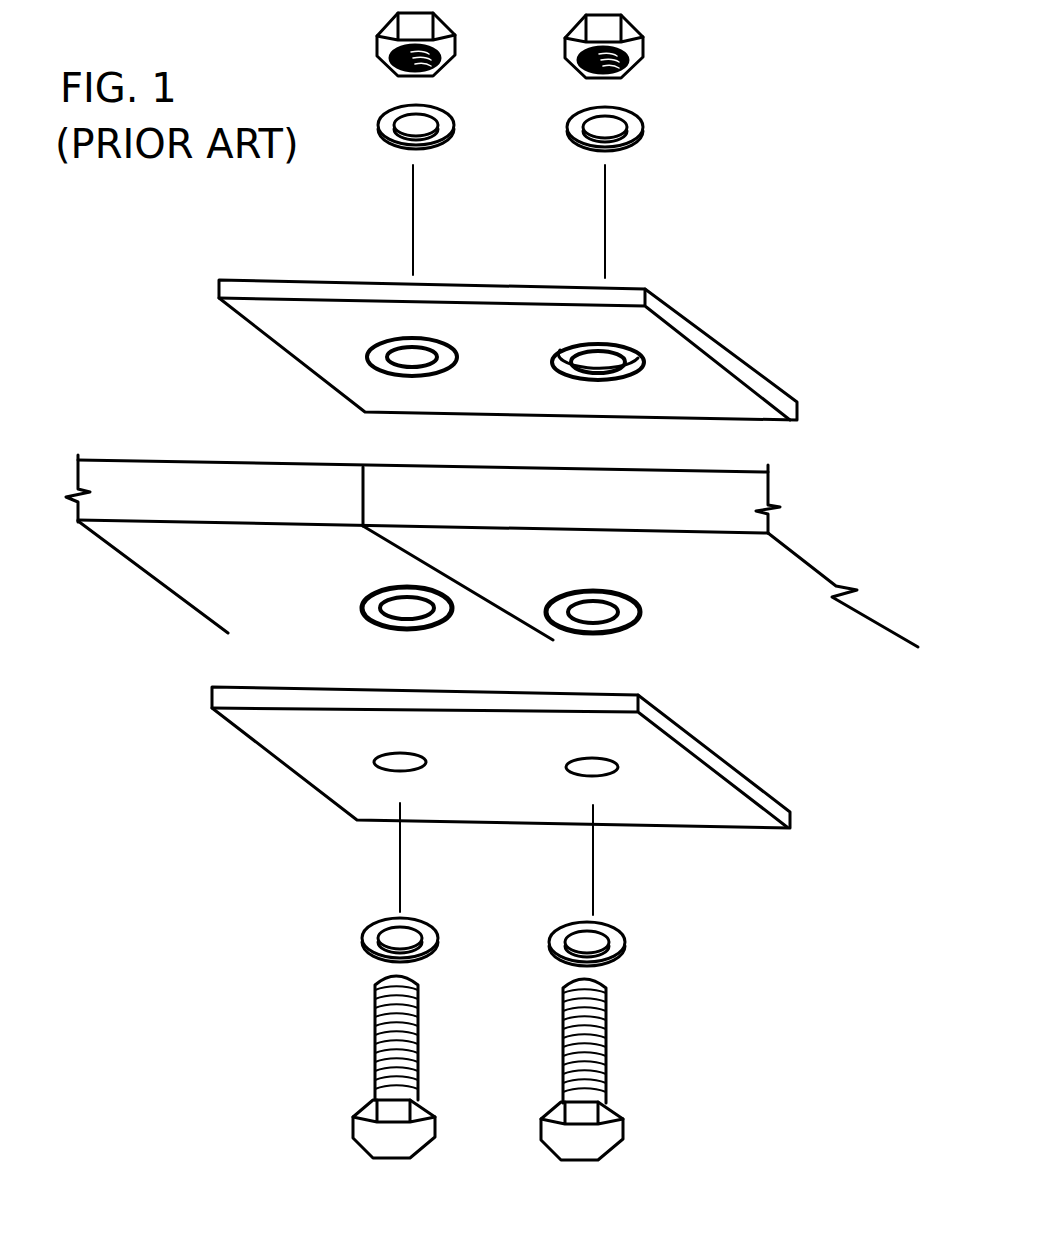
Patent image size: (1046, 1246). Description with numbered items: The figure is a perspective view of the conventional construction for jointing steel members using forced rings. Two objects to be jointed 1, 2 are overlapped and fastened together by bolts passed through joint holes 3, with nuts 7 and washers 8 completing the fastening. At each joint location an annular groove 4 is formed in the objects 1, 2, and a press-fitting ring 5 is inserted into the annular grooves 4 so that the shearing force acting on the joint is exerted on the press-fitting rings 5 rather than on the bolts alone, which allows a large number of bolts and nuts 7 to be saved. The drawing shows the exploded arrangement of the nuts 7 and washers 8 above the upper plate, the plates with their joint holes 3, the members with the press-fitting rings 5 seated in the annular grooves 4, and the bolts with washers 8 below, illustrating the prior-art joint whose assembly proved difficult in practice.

The object to be jointed 1 is at (107, 470).
The object to be jointed 2 is at (698, 350).
The joint hole 3 is at (587, 350).
The annular groove 4 is at (650, 355).
The press-fitting ring 5 is at (365, 610).
The nut 7 is at (645, 42).
The washer 8 is at (645, 128).